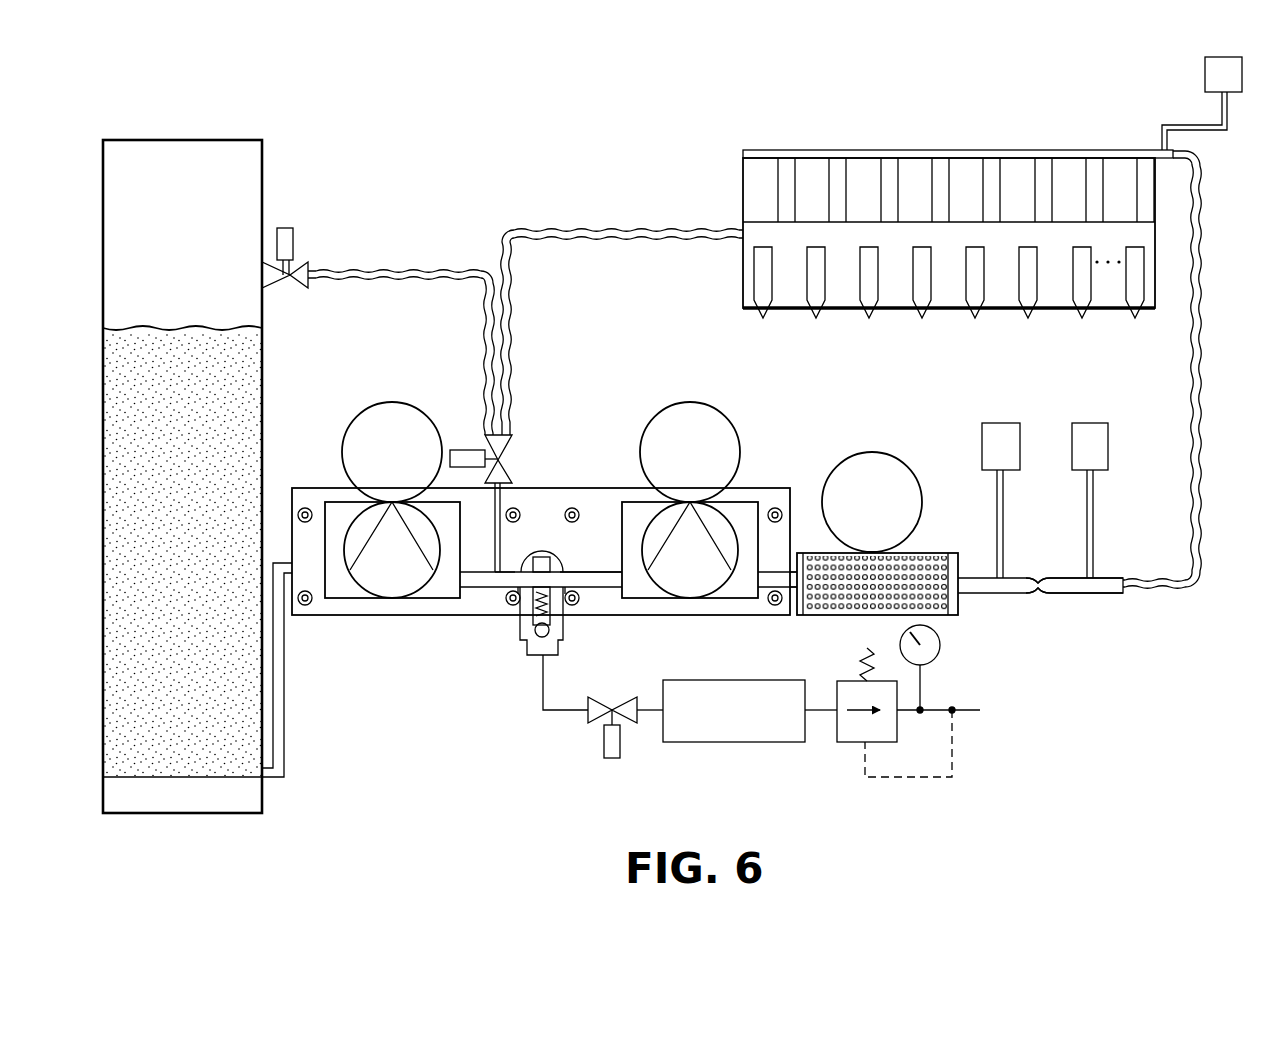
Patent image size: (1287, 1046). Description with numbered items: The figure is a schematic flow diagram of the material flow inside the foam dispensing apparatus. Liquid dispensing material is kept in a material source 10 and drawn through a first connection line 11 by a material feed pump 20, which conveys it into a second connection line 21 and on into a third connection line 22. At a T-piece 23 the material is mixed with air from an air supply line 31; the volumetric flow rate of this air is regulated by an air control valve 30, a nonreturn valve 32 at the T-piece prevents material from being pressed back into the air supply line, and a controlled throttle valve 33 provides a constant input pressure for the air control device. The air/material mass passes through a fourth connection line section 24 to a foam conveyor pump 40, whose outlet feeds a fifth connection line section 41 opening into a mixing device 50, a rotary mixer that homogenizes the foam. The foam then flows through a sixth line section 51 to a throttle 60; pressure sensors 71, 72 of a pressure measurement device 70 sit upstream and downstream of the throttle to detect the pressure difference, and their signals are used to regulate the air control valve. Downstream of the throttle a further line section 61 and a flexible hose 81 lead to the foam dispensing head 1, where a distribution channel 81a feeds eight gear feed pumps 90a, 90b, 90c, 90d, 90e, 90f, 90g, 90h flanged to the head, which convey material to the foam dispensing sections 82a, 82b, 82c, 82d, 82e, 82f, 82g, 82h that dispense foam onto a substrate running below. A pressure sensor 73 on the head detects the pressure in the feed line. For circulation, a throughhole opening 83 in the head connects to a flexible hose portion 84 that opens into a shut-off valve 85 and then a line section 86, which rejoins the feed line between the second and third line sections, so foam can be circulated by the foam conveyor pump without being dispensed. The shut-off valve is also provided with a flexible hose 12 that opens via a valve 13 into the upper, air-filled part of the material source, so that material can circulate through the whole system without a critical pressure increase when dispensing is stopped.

The foam dispensing head 1 is at (1231, 198).
The material source 10 is at (194, 527).
The first connection line 11 is at (284, 696).
The flexible hose 12 is at (398, 270).
The valve 13 is at (309, 263).
The material feed pump 20 is at (396, 576).
The second connection line 21 is at (477, 577).
The third connection line 22 is at (508, 577).
The T-piece 23 is at (543, 547).
The fourth connection line section 24 is at (597, 577).
The air control valve 30 is at (746, 728).
The air supply line 31 is at (542, 696).
The nonreturn valve 32 is at (575, 630).
The controlled throttle valve 33 is at (895, 792).
The foam conveyor pump 40 is at (694, 576).
The fifth connection line section 41 is at (776, 577).
The mixing device 50 is at (913, 578).
The sixth line section 51 is at (985, 595).
The throttle 60 is at (1038, 598).
The line section 61 is at (1103, 595).
The pressure measurement device 70 is at (1071, 427).
The pressure sensor 71 is at (990, 423).
The pressure sensor 72 is at (1100, 423).
The pressure sensor 73 is at (1235, 58).
The flexible hose 81 is at (1200, 412).
The distribution channel 81a is at (1143, 150).
The foam dispensing section 82a is at (763, 318).
The foam dispensing section 82b is at (816, 318).
The foam dispensing section 82c is at (869, 318).
The foam dispensing section 82d is at (922, 318).
The foam dispensing section 82e is at (975, 318).
The foam dispensing section 82f is at (1028, 318).
The foam dispensing section 82g is at (1082, 318).
The foam dispensing section 82h is at (1135, 318).
The throughhole opening 83 is at (743, 233).
The flexible hose portion 84 is at (627, 230).
The shut-off valve 85 is at (503, 458).
The line section 86 is at (488, 507).
The gear feed pump 90a is at (768, 222).
The gear feed pump 90b is at (819, 222).
The gear feed pump 90c is at (871, 222).
The gear feed pump 90d is at (922, 222).
The gear feed pump 90e is at (973, 222).
The gear feed pump 90f is at (1025, 222).
The gear feed pump 90g is at (1076, 222).
The gear feed pump 90h is at (1127, 222).